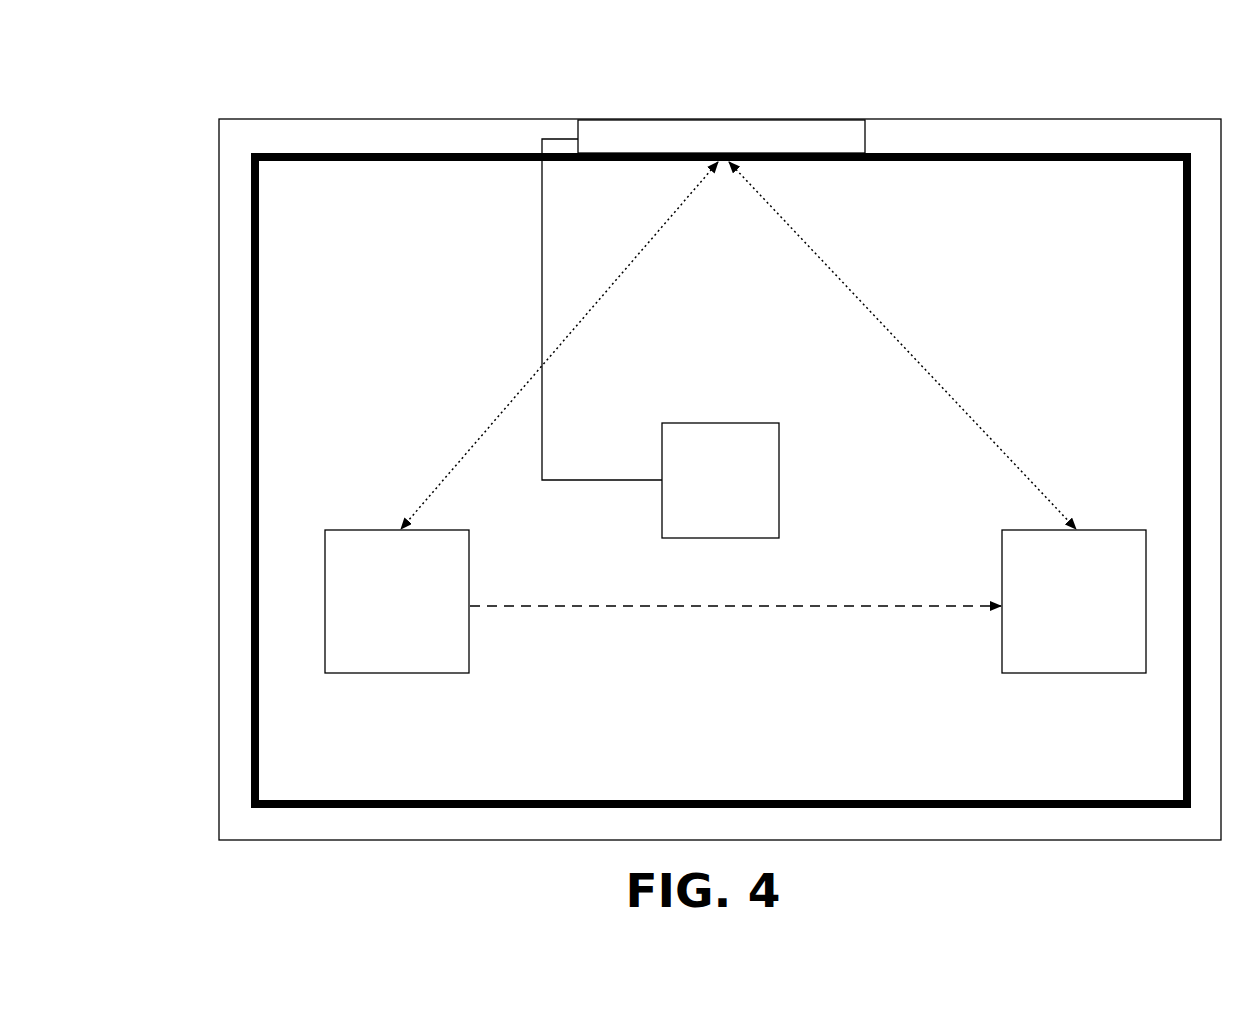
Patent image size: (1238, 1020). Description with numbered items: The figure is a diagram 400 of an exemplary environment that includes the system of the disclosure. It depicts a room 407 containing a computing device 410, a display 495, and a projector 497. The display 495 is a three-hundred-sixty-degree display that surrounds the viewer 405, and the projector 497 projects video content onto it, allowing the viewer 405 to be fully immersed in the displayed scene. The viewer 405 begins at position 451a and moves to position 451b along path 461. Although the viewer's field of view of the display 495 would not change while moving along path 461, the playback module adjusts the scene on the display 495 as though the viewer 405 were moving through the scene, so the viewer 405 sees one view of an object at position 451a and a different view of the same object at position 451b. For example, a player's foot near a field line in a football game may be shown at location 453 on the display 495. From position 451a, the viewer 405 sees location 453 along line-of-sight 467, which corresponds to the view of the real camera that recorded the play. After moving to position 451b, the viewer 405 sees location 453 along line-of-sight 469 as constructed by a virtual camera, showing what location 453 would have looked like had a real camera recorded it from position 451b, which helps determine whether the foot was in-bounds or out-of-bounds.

The diagram 400 is at (160, 87).
The room 407 is at (218, 517).
The display 495 is at (457, 153).
The computing device 410 is at (721, 136).
The projector 497 is at (660, 338).
The viewer 405 is at (735, 644).
The position 451a is at (395, 673).
The position 451b is at (1066, 673).
The location 453 is at (722, 162).
The line-of-sight 467 is at (528, 382).
The line-of-sight 469 is at (943, 390).
The path 461 is at (610, 604).